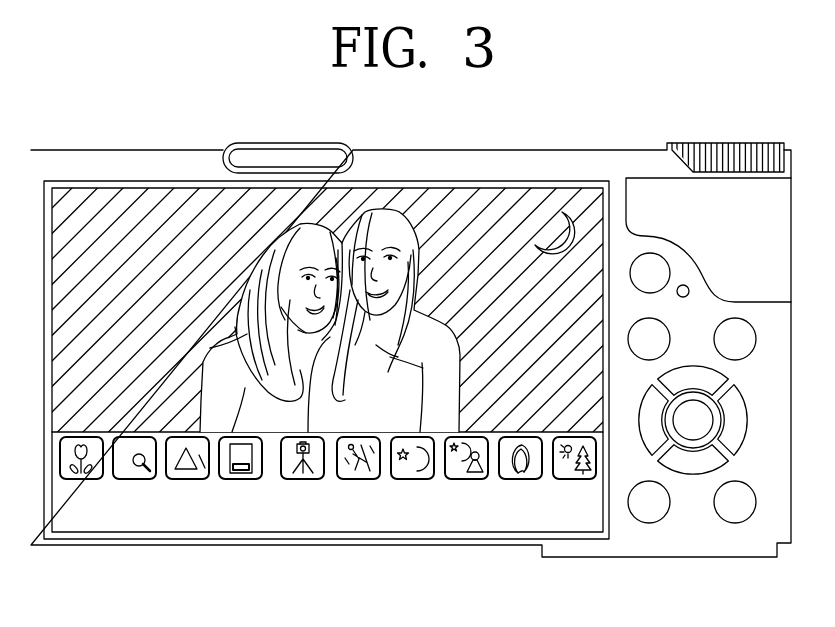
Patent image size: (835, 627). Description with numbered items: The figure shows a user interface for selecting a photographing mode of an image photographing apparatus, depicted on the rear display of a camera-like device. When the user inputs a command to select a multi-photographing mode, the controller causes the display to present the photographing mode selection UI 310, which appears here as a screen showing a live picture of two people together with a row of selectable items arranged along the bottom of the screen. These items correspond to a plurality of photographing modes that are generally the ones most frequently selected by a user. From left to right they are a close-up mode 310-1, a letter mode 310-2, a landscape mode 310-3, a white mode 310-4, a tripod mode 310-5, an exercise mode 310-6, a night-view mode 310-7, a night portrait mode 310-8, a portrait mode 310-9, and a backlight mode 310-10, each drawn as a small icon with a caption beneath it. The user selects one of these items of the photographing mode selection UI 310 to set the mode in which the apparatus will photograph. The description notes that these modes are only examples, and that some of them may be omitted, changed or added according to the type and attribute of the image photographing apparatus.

The photographing mode selection UI 310 is at (50, 507).
The close-up mode 310-1 is at (78, 533).
The letter mode 310-2 is at (135, 532).
The landscape mode 310-3 is at (188, 532).
The white mode 310-4 is at (245, 507).
The tripod mode 310-5 is at (305, 507).
The exercise mode 310-6 is at (360, 532).
The night-view mode 310-7 is at (413, 532).
The night portrait mode 310-8 is at (467, 532).
The portrait mode 310-9 is at (518, 532).
The backlight mode 310-10 is at (578, 532).